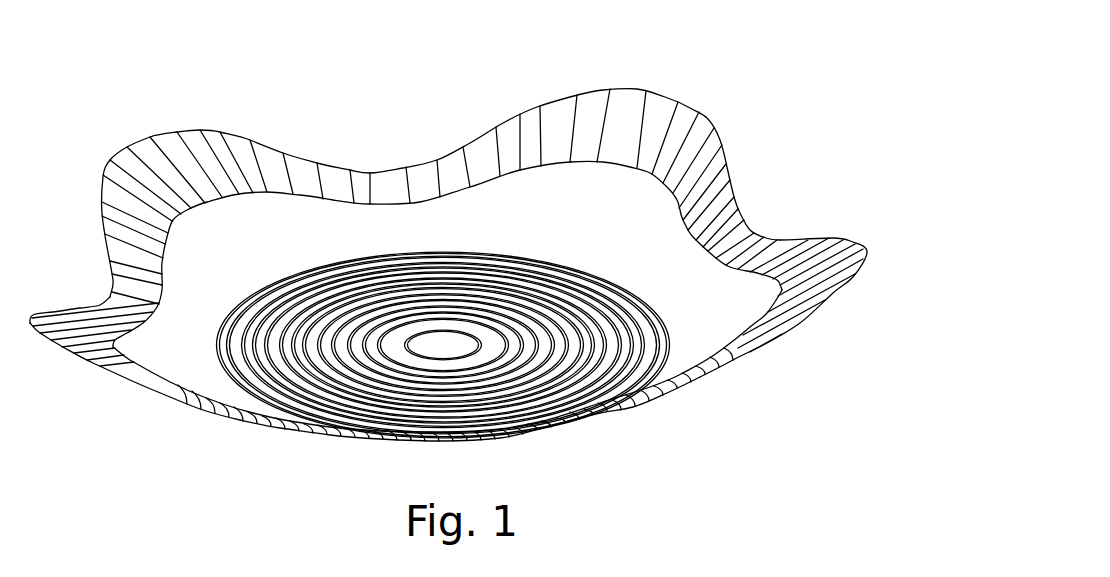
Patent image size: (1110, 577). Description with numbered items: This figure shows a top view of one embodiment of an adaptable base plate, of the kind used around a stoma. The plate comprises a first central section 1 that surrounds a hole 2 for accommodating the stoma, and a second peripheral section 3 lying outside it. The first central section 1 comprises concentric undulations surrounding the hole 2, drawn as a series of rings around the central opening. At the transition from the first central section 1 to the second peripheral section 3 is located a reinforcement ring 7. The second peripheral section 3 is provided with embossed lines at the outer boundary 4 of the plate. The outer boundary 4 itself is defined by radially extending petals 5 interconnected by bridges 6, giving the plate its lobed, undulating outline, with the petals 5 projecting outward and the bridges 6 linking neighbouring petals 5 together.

The first central section 1 is at (388, 380).
The hole 2 is at (447, 350).
The second peripheral section 3 is at (727, 318).
The outer boundary 4 is at (843, 273).
The petals 5 is at (680, 117).
The bridges 6 is at (448, 160).
The reinforcement ring 7 is at (251, 357).